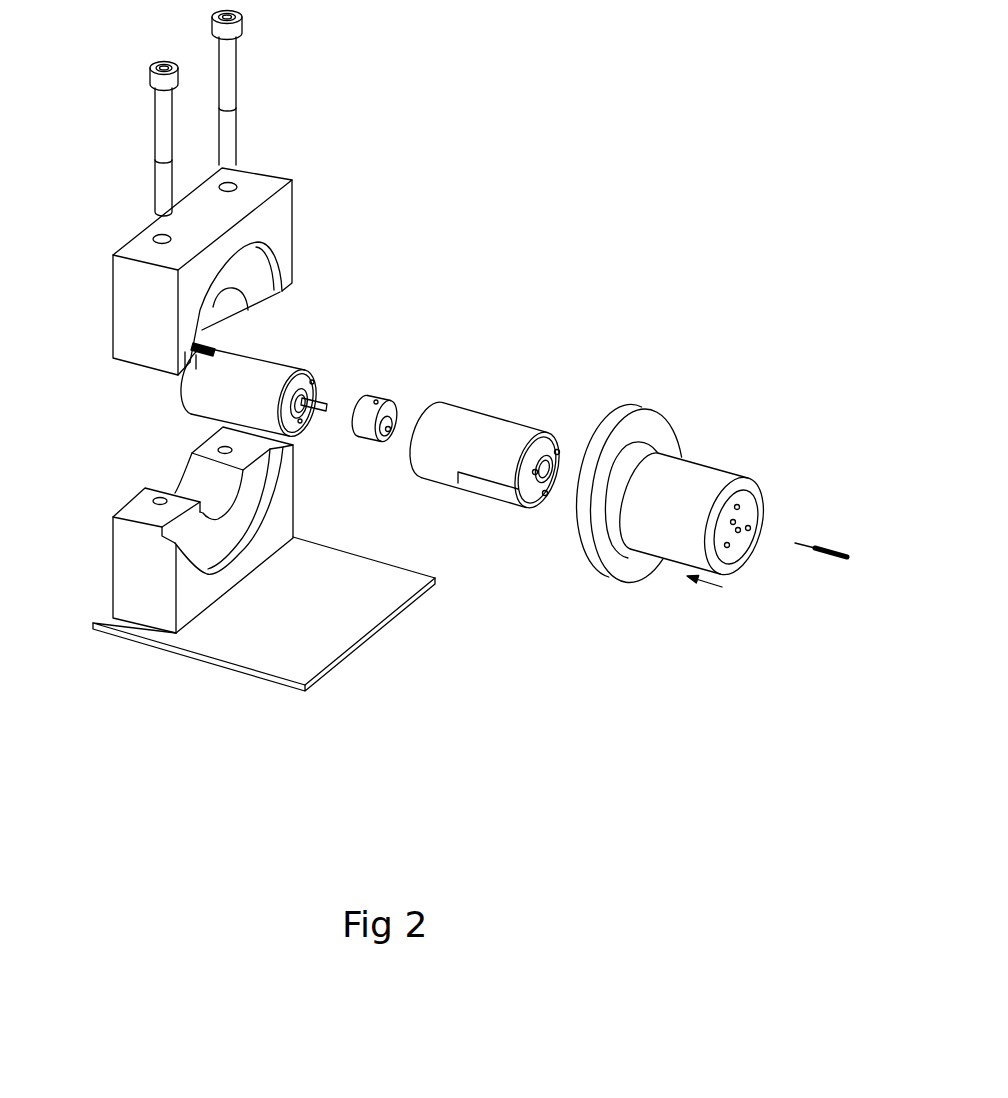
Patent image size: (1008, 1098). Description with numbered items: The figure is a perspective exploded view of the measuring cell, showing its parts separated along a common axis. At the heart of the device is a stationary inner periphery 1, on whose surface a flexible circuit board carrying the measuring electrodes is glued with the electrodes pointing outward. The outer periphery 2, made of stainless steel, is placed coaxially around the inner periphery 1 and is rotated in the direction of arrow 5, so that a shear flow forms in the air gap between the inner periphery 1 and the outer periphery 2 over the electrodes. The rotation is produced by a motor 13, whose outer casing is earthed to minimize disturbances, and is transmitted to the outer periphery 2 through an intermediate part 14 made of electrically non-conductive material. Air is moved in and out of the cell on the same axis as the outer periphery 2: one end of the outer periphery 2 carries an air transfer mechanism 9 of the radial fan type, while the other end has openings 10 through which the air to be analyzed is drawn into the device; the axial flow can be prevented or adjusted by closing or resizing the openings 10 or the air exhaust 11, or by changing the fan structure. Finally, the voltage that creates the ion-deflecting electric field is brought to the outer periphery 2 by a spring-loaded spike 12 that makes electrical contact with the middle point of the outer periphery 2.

The inner periphery 1 is at (478, 410).
The outer periphery 2 is at (727, 486).
The arrow 5 is at (707, 595).
The air transfer mechanism 9 is at (613, 418).
The openings 10 is at (737, 507).
The air exhaust 11 is at (162, 532).
The spring-loaded spike 12 is at (815, 540).
The motor 13 is at (284, 358).
The intermediate part 14 is at (377, 393).